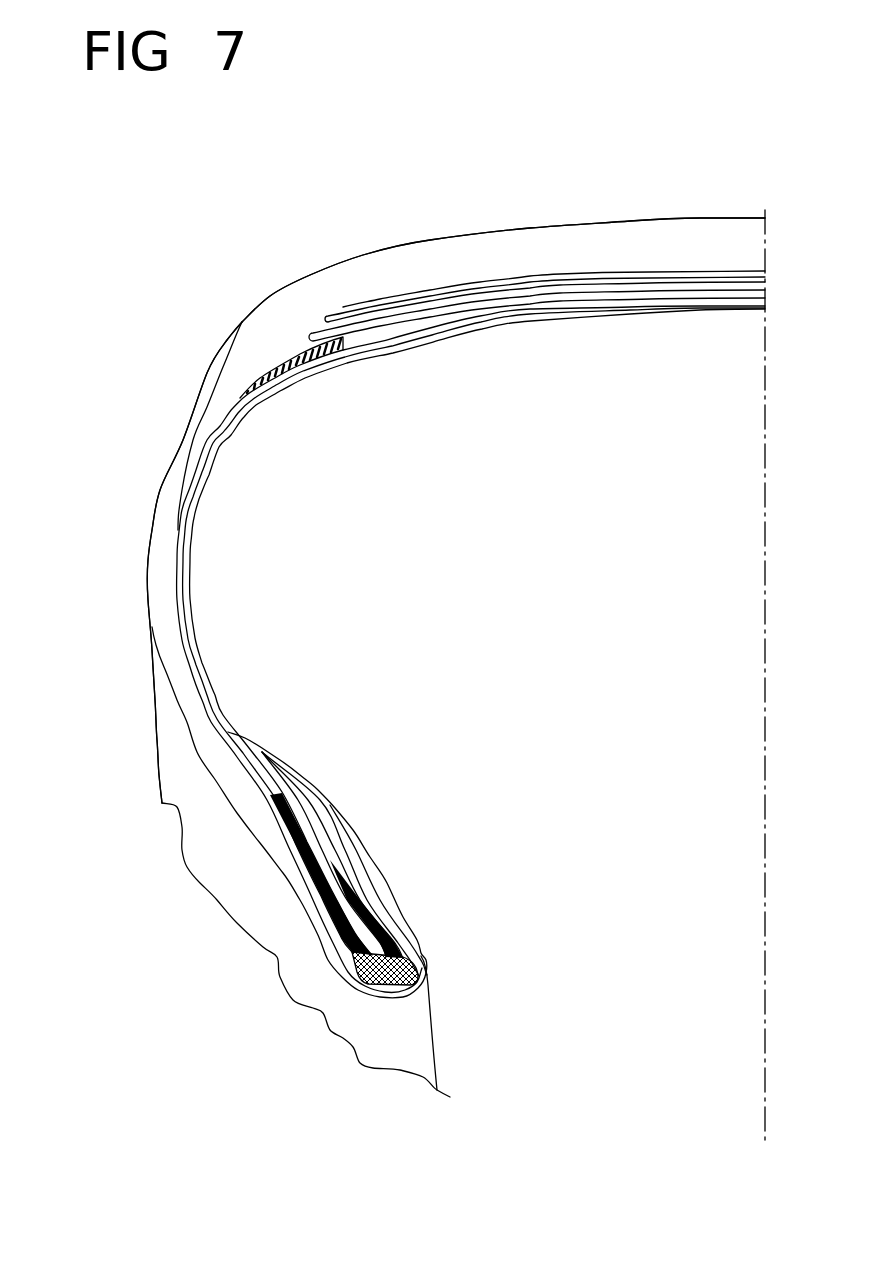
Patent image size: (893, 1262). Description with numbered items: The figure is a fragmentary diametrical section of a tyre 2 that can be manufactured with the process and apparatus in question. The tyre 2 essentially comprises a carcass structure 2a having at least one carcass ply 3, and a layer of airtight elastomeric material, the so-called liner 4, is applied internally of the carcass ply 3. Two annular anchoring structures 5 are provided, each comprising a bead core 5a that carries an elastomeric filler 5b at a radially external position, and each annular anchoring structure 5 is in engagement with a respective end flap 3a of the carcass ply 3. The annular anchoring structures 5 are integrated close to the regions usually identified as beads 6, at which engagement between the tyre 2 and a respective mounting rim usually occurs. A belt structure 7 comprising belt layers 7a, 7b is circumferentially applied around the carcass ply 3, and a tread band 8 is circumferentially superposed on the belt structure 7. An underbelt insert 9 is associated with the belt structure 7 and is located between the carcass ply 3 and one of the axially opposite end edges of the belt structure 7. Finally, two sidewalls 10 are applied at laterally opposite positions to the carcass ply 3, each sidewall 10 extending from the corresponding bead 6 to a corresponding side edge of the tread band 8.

The tyre 2 is at (113, 642).
The carcass structure 2a is at (314, 825).
The carcass ply 3 is at (222, 735).
The end flaps of the carcass ply 3a is at (338, 935).
The liner 4 is at (343, 355).
The annular anchoring structure 5 is at (360, 880).
The bead core 5a is at (420, 956).
The elastomeric filler 5b is at (327, 883).
The bead 6 is at (410, 908).
The belt structure 7 is at (720, 252).
The belt layer 7a is at (578, 288).
The belt layer 7b is at (545, 280).
The tread band 8 is at (638, 235).
The underbelt insert 9 is at (303, 343).
The sidewall 10 is at (163, 513).